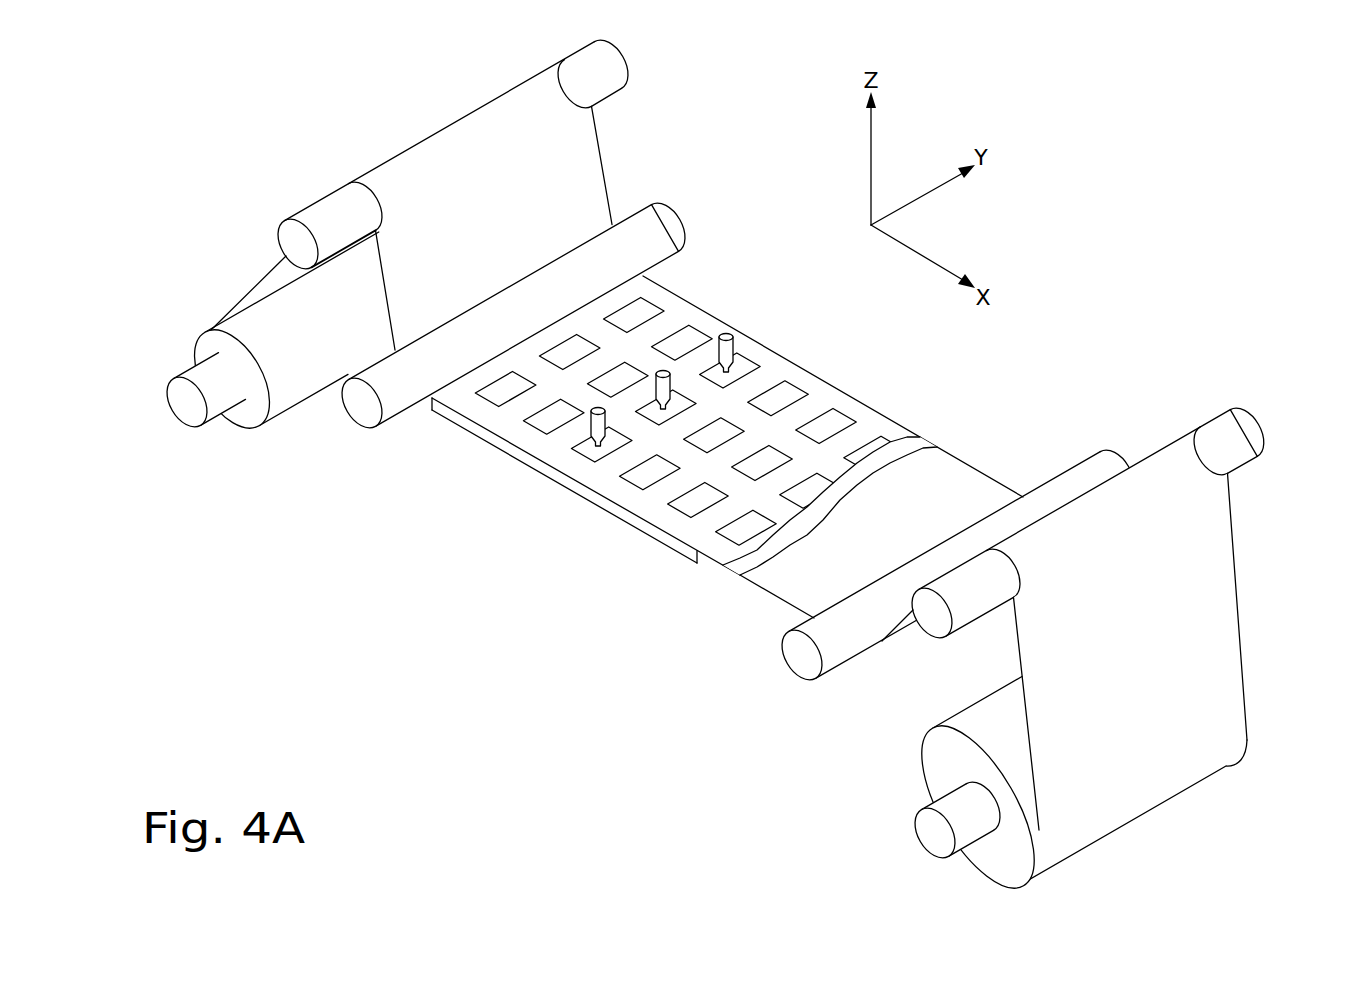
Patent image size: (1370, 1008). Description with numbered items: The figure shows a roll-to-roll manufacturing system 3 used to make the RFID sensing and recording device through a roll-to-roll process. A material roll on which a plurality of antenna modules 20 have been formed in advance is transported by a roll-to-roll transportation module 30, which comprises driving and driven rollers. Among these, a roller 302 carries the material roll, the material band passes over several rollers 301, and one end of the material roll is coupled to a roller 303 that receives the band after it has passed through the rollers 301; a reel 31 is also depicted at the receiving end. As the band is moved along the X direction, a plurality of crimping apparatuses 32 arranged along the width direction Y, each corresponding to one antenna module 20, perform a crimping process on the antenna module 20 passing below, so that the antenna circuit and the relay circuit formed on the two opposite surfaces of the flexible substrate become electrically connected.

The roll-to-roll manufacturing system 3 is at (288, 148).
The roller 301 is at (607, 68).
The roll-to-roll transportation module 30 is at (162, 374).
The roller 303 is at (190, 405).
The antenna module 20 is at (745, 360).
The crimping apparatus 32 is at (727, 334).
The take-up reel 31 is at (928, 778).
The roller 302 is at (923, 827).